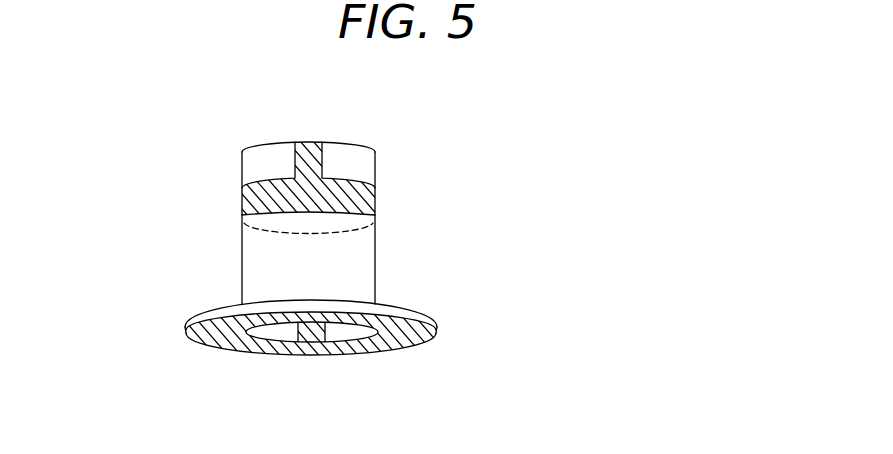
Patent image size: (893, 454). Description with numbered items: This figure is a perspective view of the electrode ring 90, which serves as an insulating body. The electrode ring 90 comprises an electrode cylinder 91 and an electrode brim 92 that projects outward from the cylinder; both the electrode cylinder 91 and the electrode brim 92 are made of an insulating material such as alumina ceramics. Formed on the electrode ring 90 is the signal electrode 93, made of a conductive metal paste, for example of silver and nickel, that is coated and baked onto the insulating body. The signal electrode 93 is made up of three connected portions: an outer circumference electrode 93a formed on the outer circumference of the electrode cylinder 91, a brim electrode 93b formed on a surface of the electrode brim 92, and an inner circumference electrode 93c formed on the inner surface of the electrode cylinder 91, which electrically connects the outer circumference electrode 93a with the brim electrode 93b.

The electrode ring 90 is at (228, 174).
The electrode cylinder 91 is at (253, 245).
The electrode brim 92 is at (208, 313).
The signal electrode 93 is at (476, 247).
The outer circumference electrode 93a is at (360, 203).
The brim electrode 93b is at (437, 333).
The inner circumference electrode 93c is at (323, 311).